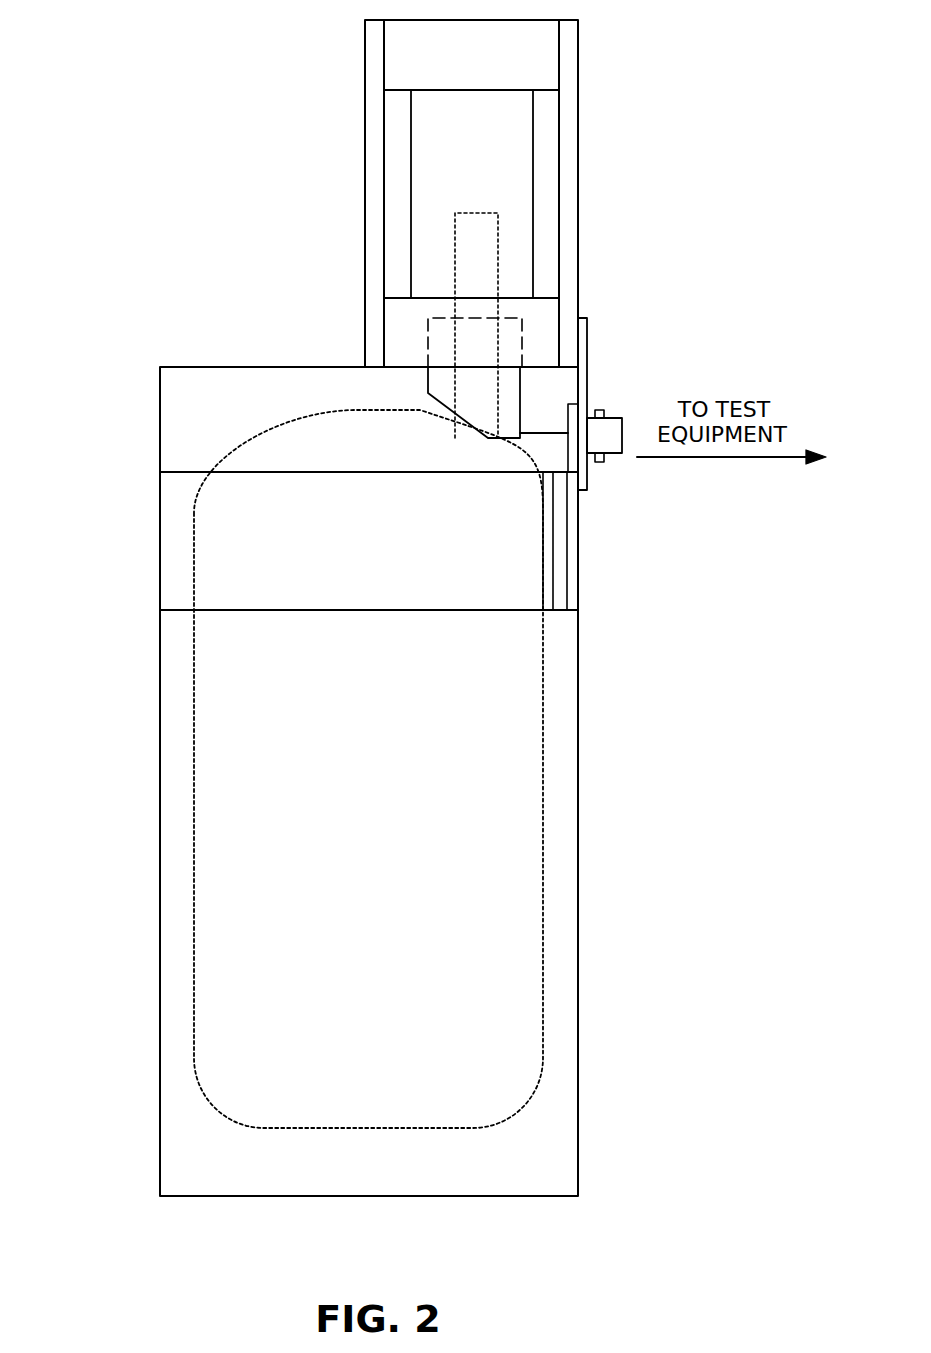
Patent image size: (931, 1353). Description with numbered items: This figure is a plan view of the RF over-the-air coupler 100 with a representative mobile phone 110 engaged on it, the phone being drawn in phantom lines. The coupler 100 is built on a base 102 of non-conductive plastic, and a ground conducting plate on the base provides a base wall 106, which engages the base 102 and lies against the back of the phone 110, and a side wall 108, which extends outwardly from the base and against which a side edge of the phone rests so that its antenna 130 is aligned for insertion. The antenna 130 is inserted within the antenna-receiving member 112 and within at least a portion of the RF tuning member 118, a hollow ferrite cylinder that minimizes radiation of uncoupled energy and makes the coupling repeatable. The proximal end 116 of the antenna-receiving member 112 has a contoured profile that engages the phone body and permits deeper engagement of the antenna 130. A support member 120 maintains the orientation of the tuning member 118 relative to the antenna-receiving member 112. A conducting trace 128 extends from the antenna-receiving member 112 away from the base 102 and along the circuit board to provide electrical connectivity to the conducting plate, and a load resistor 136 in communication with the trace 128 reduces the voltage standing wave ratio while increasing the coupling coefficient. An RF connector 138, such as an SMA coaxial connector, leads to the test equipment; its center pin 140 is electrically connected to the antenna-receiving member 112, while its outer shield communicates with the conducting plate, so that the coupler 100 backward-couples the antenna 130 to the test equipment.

The RF over-the-air coupler 100 is at (140, 153).
The base 102 is at (545, 1163).
The base wall 106 is at (177, 573).
The side wall 108 is at (543, 575).
The mobile phone 110 is at (508, 713).
The antenna-receiving member 112 is at (437, 387).
The proximal end 116 is at (451, 430).
The RF tuning member 118 is at (528, 143).
The support member 120 is at (553, 213).
The conducting trace 128 is at (587, 353).
The antenna 130 is at (487, 270).
The load resistor 136 is at (568, 413).
The RF connector 138 is at (608, 462).
The center pin 140 is at (543, 440).